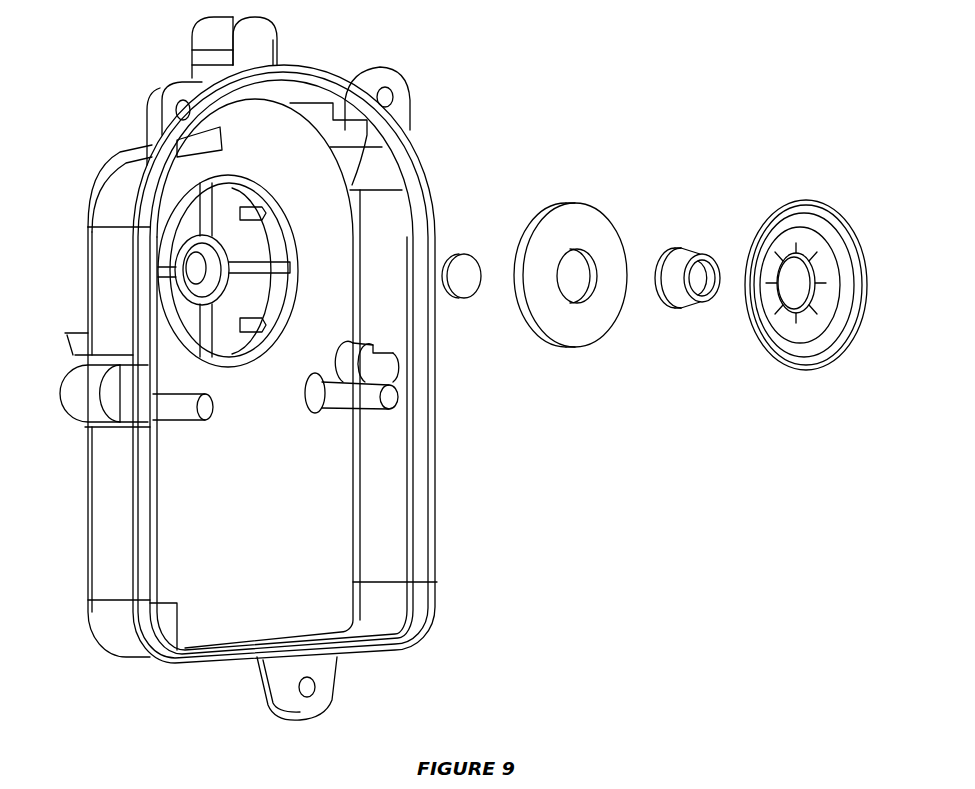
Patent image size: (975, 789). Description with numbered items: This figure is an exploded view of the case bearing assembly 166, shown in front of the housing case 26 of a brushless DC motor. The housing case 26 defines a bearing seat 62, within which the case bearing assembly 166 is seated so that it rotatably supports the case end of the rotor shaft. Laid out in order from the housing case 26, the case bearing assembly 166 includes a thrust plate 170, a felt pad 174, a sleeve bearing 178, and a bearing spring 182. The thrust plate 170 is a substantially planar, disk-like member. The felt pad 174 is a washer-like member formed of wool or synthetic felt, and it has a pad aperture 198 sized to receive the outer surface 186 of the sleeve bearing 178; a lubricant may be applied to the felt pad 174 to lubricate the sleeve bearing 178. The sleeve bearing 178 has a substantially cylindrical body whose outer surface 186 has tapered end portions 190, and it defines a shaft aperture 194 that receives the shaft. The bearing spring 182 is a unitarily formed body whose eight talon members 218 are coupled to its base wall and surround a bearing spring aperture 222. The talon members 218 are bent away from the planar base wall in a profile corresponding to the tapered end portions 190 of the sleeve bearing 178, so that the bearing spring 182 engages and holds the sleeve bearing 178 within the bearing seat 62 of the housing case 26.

The housing case 26 is at (100, 307).
The bearing seat 62 is at (240, 247).
The case bearing assembly 166 is at (632, 117).
The thrust plate 170 is at (462, 276).
The felt pad 174 is at (589, 259).
The pad aperture 198 is at (588, 266).
The sleeve bearing 178 is at (693, 290).
The outer surface 186 is at (667, 293).
The tapered end portions 190 is at (687, 297).
The shaft aperture 194 is at (707, 263).
The bearing spring 182 is at (815, 274).
The talon members 218 is at (800, 240).
The bearing spring aperture 222 is at (798, 288).